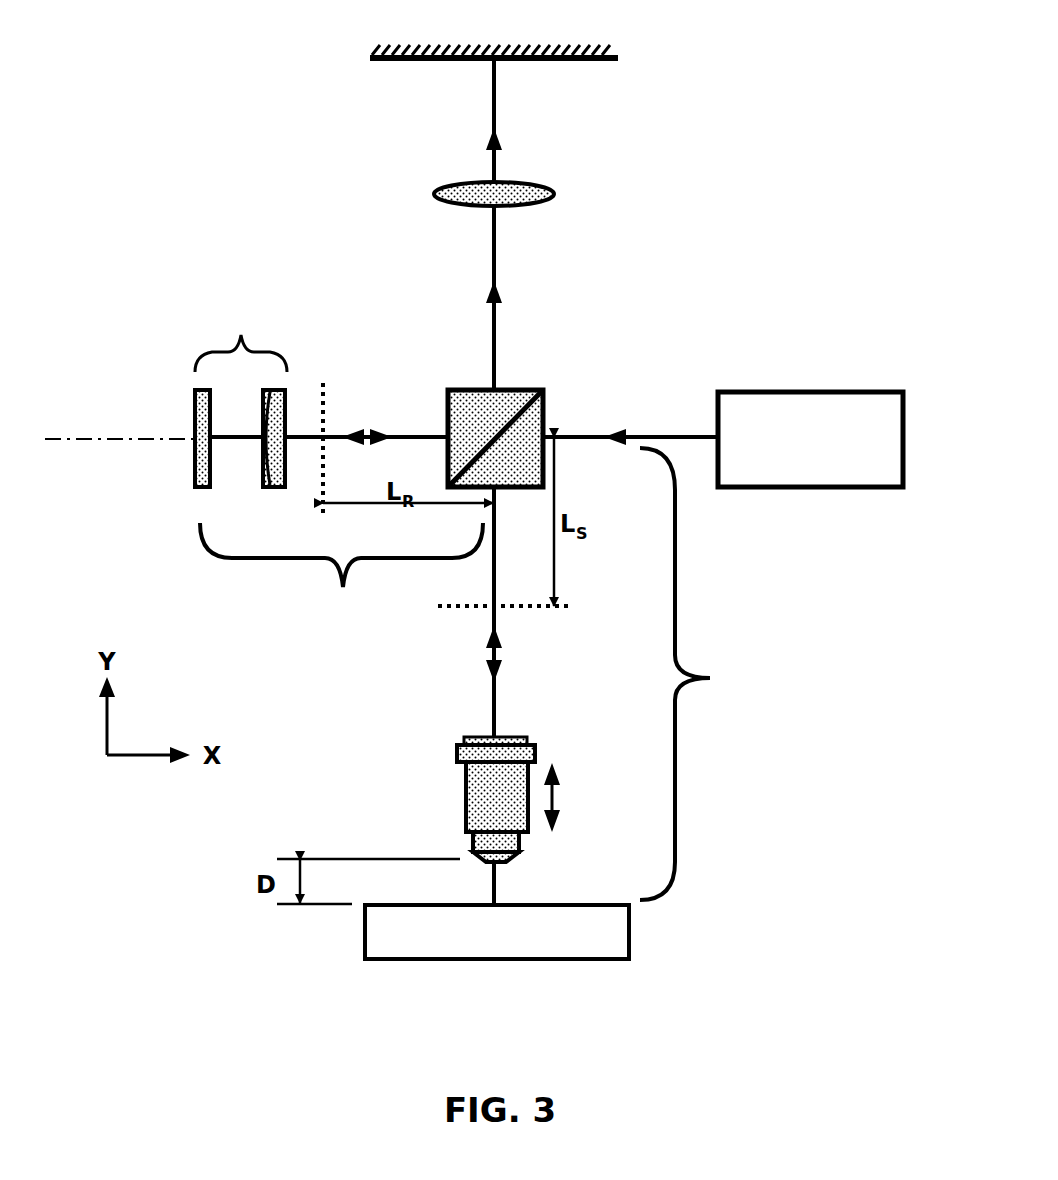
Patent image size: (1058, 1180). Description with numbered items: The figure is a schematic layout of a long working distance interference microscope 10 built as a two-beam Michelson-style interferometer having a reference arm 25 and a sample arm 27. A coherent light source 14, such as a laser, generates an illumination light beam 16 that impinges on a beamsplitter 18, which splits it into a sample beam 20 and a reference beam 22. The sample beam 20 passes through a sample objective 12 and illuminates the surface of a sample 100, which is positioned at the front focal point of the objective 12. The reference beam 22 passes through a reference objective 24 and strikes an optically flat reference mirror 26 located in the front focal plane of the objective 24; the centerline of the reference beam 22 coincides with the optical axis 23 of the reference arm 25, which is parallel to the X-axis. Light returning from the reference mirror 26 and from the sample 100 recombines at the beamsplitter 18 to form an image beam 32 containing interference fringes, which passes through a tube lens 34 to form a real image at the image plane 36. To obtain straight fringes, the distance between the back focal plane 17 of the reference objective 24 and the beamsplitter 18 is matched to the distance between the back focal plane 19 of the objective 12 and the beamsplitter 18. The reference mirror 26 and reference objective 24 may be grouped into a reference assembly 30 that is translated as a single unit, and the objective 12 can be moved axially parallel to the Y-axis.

The interference microscope 10 is at (203, 82).
The sample objective 12 is at (477, 793).
The coherent light source 14 is at (822, 392).
The illumination light beam 16 is at (640, 437).
The back focal plane of reference objective 17 is at (328, 403).
The beamsplitter 18 is at (513, 392).
The back focal plane of objective 19 is at (571, 605).
The sample beam 20 is at (497, 706).
The reference beam 22 is at (407, 437).
The optical axis 23 is at (104, 434).
The reference objective 24 is at (288, 395).
The reference arm 25 is at (341, 587).
The reference mirror 26 is at (196, 395).
The sample arm 27 is at (787, 674).
The reference assembly 30 is at (241, 336).
The image beam 32 is at (494, 270).
The tube lens 34 is at (538, 186).
The image plane 36 is at (392, 52).
The sample 100 is at (571, 947).